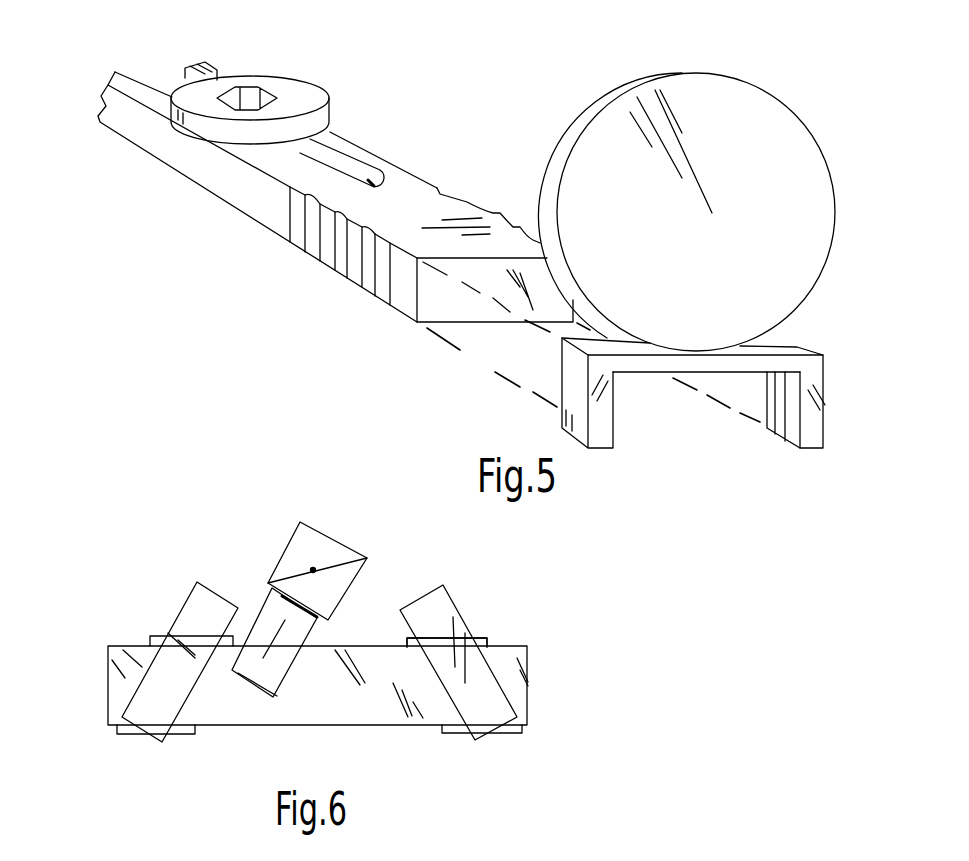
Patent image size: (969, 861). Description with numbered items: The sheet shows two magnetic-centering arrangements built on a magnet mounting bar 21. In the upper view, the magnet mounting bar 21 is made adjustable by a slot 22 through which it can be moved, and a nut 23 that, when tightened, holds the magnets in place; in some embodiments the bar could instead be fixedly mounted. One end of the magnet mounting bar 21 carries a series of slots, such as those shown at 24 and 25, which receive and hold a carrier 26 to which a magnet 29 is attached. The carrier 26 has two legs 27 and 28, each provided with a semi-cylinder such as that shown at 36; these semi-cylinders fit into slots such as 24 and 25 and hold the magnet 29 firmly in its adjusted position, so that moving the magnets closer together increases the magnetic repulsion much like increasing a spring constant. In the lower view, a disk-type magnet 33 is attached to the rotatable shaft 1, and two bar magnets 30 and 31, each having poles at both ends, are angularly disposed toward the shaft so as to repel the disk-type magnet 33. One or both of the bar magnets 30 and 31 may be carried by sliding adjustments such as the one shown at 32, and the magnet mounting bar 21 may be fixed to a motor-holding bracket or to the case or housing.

In FIG. 6, the shaft 1 is at (303, 543).
In FIG. 5, the magnet mounting bar 21 is at (210, 171).
In FIG. 6, the magnet mounting bar 21 is at (108, 660).
In FIG. 5, the slot 22 is at (317, 160).
In FIG. 5, the nut 23 is at (277, 87).
In FIG. 5, the slot 24 is at (380, 275).
In FIG. 5, the slot 25 is at (440, 188).
In FIG. 5, the carrier 26 is at (787, 343).
In FIG. 5, the leg 27 is at (817, 377).
In FIG. 5, the leg 28 is at (563, 380).
In FIG. 5, the magnet 29 is at (763, 140).
In FIG. 6, the bar magnet 30 is at (460, 690).
In FIG. 6, the bar magnet 31 is at (180, 692).
In FIG. 6, the sliding adjustment 32 is at (480, 638).
In FIG. 6, the disk-type magnet 33 is at (283, 662).
In FIG. 5, the semi-cylinder 36 is at (777, 433).